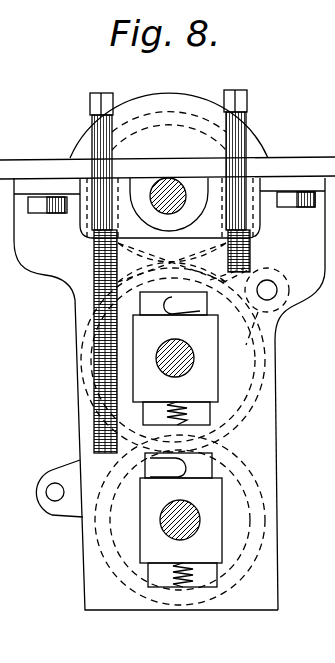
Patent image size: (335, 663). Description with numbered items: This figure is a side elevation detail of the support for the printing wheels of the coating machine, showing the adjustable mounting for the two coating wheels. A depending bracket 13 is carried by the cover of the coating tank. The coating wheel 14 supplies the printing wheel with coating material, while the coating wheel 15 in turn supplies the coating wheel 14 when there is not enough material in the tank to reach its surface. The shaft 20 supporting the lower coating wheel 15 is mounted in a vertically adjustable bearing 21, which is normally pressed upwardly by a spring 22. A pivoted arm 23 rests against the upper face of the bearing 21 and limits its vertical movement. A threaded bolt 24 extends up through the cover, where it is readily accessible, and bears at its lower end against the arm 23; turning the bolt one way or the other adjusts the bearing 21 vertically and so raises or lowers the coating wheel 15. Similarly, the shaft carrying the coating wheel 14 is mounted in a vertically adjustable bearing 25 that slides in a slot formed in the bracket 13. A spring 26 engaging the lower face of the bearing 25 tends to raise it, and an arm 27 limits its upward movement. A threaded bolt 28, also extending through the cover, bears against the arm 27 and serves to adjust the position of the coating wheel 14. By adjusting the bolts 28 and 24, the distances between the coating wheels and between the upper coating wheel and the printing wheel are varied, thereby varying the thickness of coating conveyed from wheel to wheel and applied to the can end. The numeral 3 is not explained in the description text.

The frame 3 is at (162, 394).
The depending bracket 13 is at (278, 268).
The coating wheel 14 is at (334, 382).
The coating wheel 15 is at (334, 544).
The shaft 20 is at (196, 508).
The vertically adjustable bearing 21 is at (181, 520).
The spring 22 is at (179, 588).
The pivoted arm 23 is at (170, 470).
The threaded bolt 24 is at (90, 125).
The vertically adjustable bearing 25 is at (207, 364).
The spring 26 is at (178, 410).
The arm 27 is at (180, 303).
The threaded bolt 28 is at (248, 124).